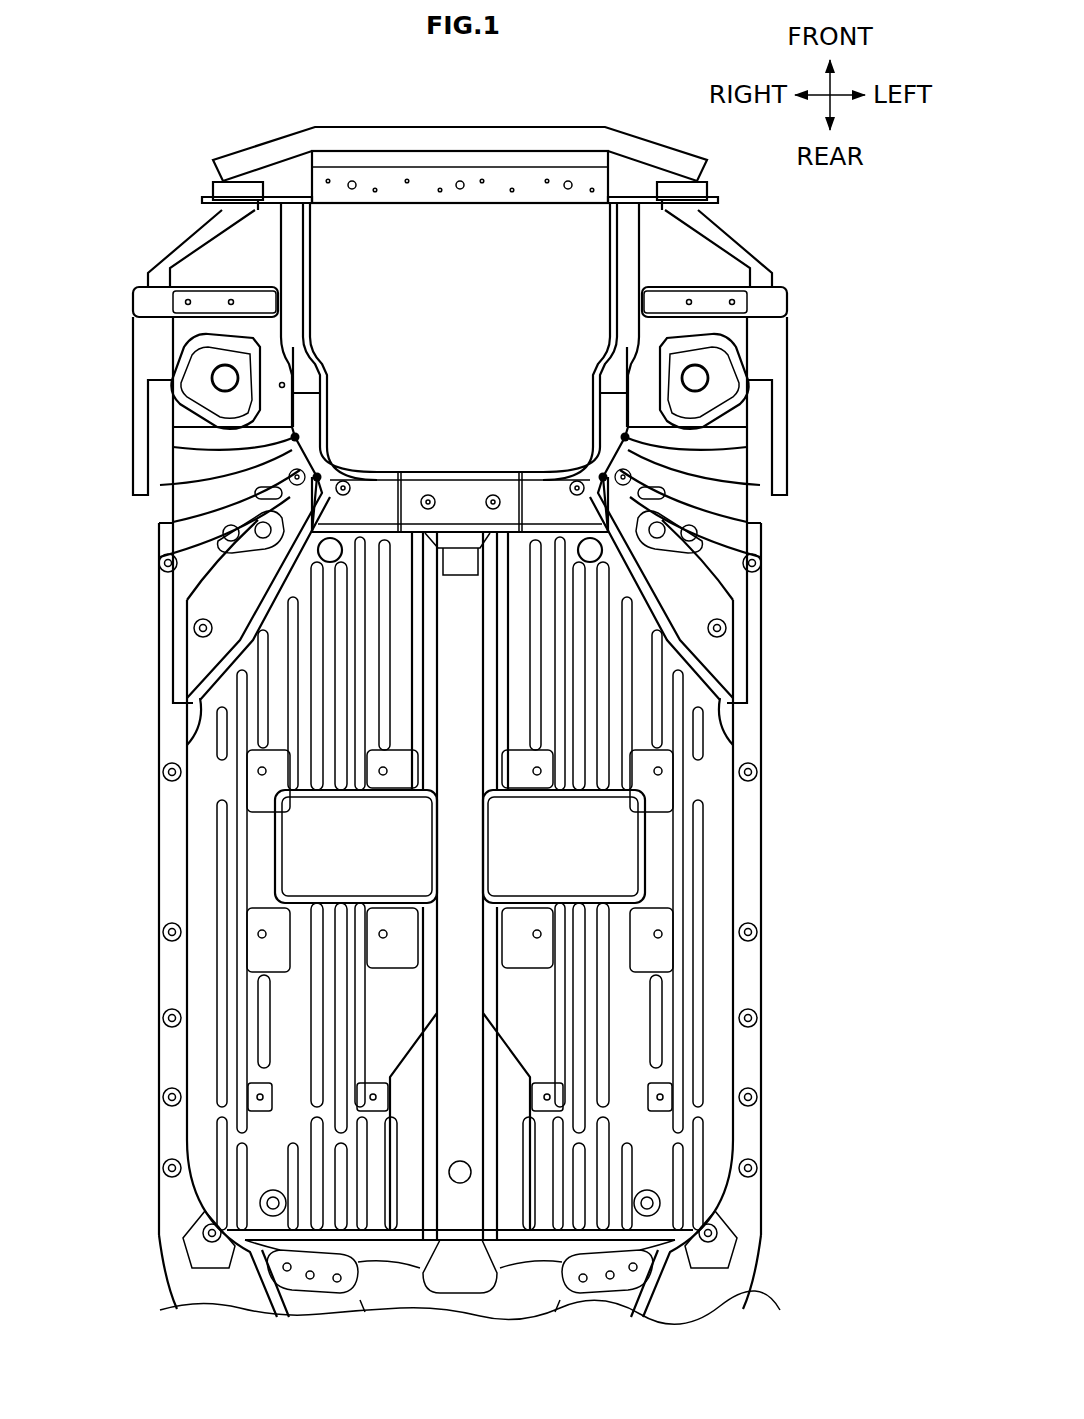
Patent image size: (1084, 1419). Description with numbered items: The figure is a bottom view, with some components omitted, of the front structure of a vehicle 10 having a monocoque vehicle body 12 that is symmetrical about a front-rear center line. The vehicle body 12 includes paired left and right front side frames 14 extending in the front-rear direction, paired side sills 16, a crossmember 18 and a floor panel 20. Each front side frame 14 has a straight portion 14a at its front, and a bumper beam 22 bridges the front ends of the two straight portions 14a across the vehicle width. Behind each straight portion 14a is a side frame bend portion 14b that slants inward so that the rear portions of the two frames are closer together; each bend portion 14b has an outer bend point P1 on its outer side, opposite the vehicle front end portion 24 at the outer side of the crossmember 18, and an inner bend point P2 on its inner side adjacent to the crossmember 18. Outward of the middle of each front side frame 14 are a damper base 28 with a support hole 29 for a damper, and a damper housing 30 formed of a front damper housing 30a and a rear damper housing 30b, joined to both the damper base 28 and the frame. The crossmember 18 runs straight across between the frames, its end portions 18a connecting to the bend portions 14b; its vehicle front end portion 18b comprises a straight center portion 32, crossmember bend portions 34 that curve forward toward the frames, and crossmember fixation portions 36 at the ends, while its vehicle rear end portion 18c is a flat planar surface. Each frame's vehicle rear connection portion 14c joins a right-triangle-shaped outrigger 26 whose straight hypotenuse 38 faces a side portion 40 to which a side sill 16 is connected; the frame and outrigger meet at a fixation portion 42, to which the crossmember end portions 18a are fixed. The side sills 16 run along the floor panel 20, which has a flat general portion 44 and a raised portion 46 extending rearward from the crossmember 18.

The vehicle 10 is at (238, 108).
The vehicle body 12 is at (460, 920).
The front side frame 14 is at (465, 474).
The straight portion 14a is at (313, 260).
The side frame bend portion 14b is at (325, 436).
The vehicle rear connection portion 14c is at (246, 583).
The side sill 16 is at (156, 899).
The crossmember 18 is at (459, 500).
The end portion 18a is at (327, 498).
The vehicle front end portion 18b is at (425, 438).
The vehicle rear end portion 18c is at (460, 540).
The floor panel 20 is at (460, 928).
The bumper beam 22 is at (462, 116).
The vehicle front end portion 24 is at (325, 393).
The outrigger 26 is at (163, 662).
The damper base 28 is at (140, 302).
The support hole 29 is at (215, 378).
The damper housing 30 is at (460, 400).
The front damper housing 30a is at (253, 330).
The rear damper housing 30b is at (240, 460).
The center portion 32 is at (472, 488).
The crossmember bend portion 34 is at (341, 468).
The crossmember fixation portion 36 is at (193, 631).
The hypotenuse 38 is at (460, 788).
The side portion 40 is at (460, 723).
The fixation portion 42 is at (158, 564).
The general portion 44 is at (640, 1046).
The raised portion 46 is at (457, 973).
The outer bend point P1 is at (290, 436).
The inner bend point P2 is at (312, 480).